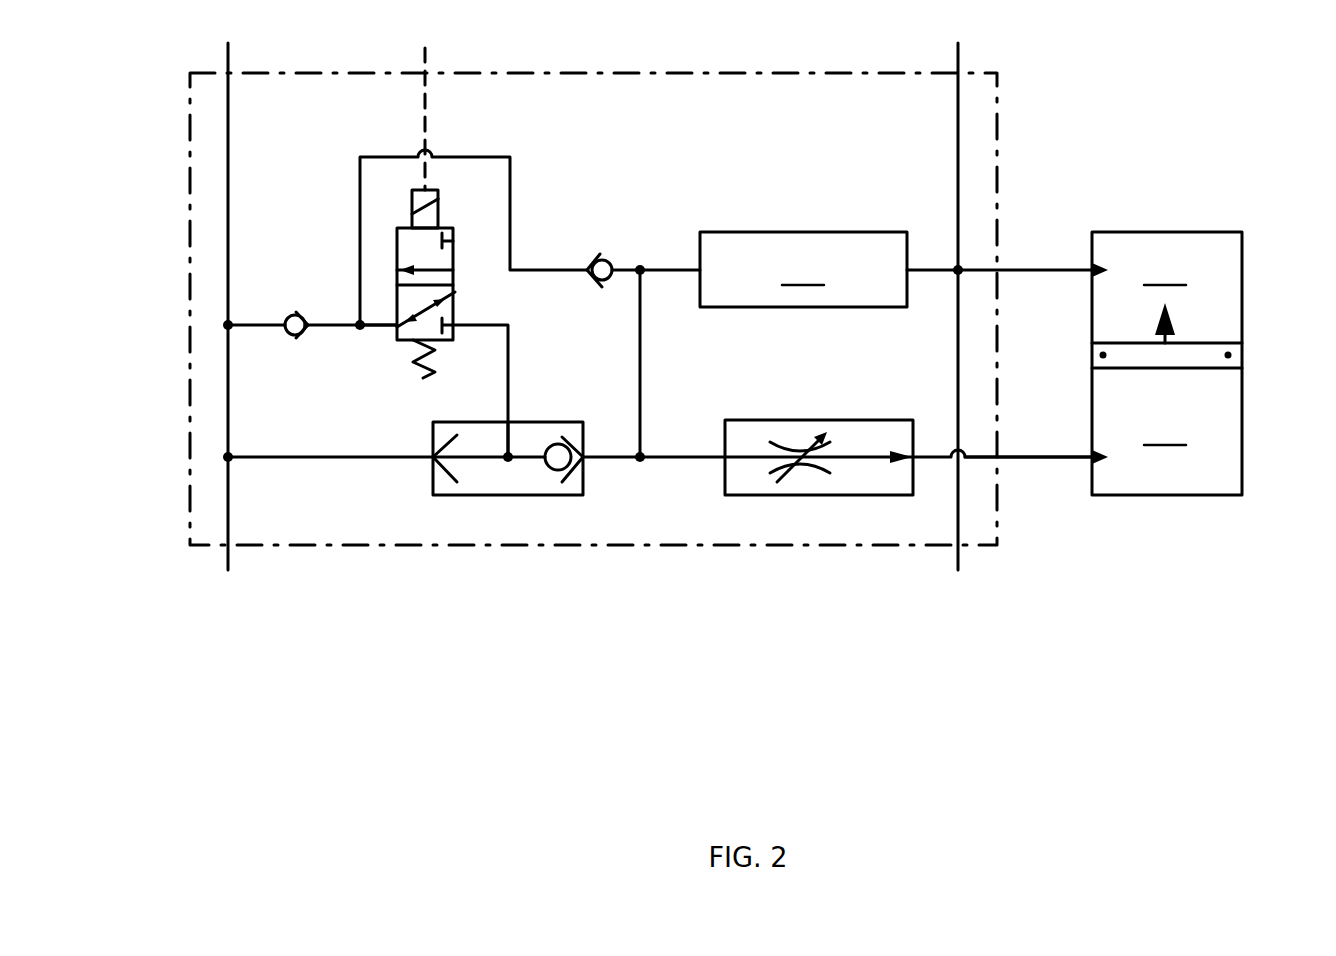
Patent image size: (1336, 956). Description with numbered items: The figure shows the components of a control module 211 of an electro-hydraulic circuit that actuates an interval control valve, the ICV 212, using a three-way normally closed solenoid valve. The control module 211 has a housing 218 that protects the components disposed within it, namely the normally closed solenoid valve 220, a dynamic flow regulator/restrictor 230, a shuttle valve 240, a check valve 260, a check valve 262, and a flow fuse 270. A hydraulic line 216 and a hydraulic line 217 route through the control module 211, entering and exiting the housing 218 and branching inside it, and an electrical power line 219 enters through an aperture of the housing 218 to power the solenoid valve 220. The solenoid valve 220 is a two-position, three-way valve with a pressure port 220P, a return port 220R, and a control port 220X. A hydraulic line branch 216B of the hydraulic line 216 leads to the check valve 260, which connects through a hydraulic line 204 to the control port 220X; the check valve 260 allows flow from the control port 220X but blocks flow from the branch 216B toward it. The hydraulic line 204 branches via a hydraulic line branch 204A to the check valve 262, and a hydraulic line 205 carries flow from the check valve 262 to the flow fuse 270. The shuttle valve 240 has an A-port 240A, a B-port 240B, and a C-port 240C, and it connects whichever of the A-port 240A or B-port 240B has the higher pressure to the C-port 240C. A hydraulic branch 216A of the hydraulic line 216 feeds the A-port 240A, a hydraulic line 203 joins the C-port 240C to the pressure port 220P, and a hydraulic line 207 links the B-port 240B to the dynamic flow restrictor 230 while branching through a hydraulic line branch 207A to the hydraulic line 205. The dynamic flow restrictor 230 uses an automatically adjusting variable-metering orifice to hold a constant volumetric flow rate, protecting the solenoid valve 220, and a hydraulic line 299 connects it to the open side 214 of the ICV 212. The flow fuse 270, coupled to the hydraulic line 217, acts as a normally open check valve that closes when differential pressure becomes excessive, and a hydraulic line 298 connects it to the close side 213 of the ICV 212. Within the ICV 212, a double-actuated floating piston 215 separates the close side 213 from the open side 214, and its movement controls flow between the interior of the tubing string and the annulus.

The control module 211 is at (567, 70).
The ICV 212 is at (1175, 225).
The close side 213 is at (1167, 287).
The open side 214 is at (1167, 431).
The double-actuated floating piston 215 is at (1193, 362).
The hydraulic line 216 is at (228, 135).
The hydraulic branch 216A is at (286, 460).
The hydraulic line branch 216B is at (257, 330).
The hydraulic line 217 is at (958, 118).
The housing 218 is at (190, 440).
The electrical power line 219 is at (420, 108).
The normally closed solenoid valve 220 is at (397, 243).
The return port 220R is at (460, 298).
The pressure port 220P is at (462, 336).
The control port 220X is at (388, 333).
The hydraulic line 203 is at (508, 394).
The hydraulic line 204 is at (330, 322).
The hydraulic line branch 204A is at (488, 153).
The hydraulic line 205 is at (651, 263).
The hydraulic line 207 is at (672, 453).
The hydraulic line branch 207A is at (645, 340).
The dynamic flow regulator/restrictor 230 is at (830, 497).
The shuttle valve 240 is at (500, 497).
The A-port 240A is at (425, 465).
The B-port 240B is at (593, 466).
The C-port 240C is at (516, 415).
The check valve 260 is at (283, 318).
The check valve 262 is at (592, 262).
The flow fuse 270 is at (803, 269).
The hydraulic line 298 is at (1023, 270).
The hydraulic line 299 is at (1052, 462).